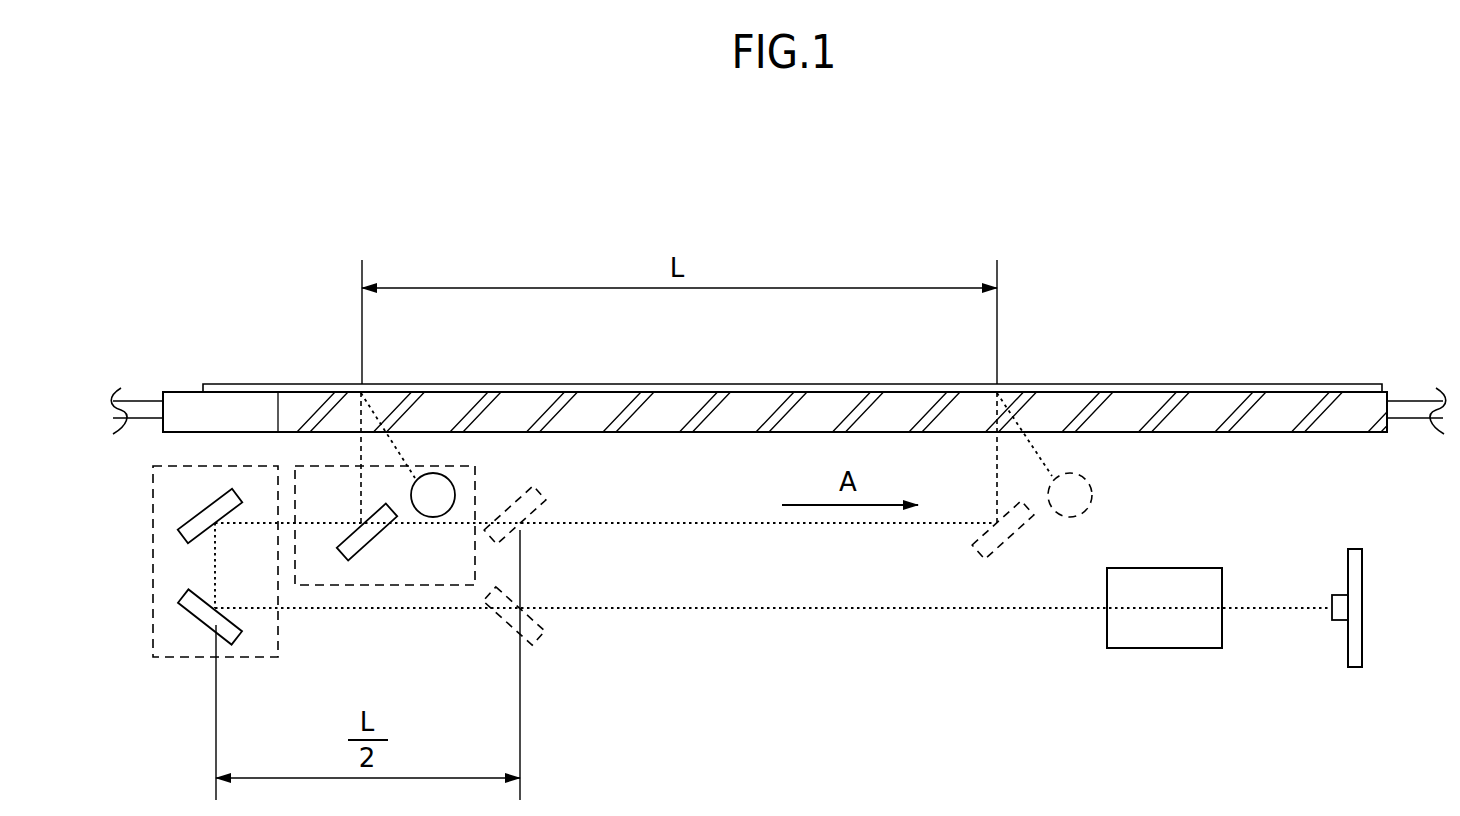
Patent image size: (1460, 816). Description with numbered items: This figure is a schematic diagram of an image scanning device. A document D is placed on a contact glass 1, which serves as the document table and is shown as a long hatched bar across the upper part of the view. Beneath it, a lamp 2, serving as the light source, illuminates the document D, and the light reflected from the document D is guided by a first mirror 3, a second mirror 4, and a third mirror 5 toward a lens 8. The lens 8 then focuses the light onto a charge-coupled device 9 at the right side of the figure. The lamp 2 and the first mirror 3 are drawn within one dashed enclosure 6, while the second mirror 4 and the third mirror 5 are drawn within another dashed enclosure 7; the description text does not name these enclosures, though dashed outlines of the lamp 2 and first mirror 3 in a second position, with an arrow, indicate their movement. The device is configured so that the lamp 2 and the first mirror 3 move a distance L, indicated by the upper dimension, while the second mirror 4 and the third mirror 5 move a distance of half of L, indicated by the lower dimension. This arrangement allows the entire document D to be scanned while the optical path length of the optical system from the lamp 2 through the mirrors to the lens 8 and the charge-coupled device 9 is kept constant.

The contact glass 1 is at (1115, 402).
The lamp 2 is at (435, 518).
The first mirror 3 is at (345, 558).
The second mirror 4 is at (200, 513).
The third mirror 5 is at (195, 620).
The first unit (movable) 6 is at (475, 480).
The second unit (fixed) 7 is at (158, 657).
The lens 8 is at (1145, 649).
The charge-coupled device (CCD) 9 is at (1353, 668).
The document D is at (1245, 384).